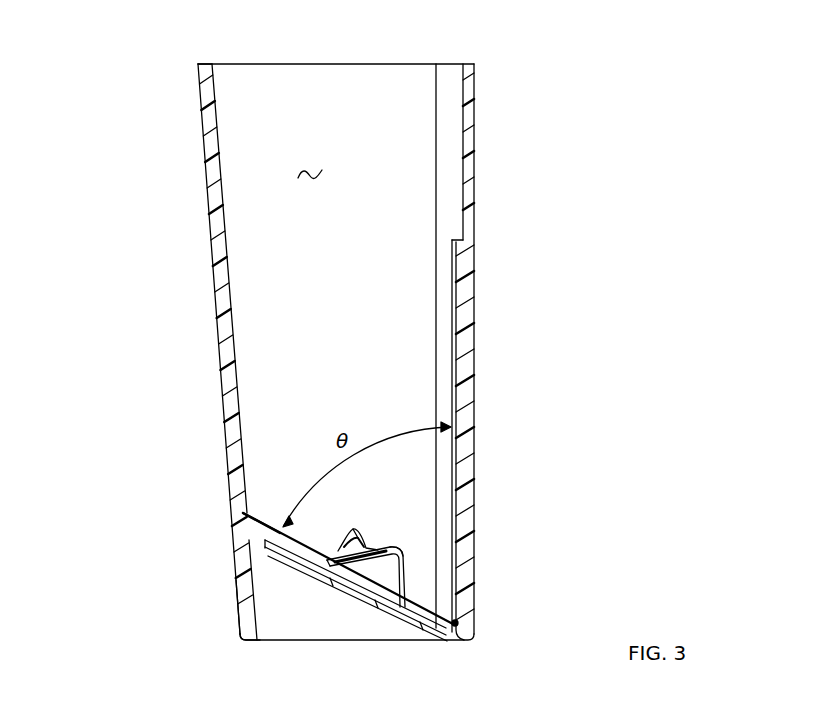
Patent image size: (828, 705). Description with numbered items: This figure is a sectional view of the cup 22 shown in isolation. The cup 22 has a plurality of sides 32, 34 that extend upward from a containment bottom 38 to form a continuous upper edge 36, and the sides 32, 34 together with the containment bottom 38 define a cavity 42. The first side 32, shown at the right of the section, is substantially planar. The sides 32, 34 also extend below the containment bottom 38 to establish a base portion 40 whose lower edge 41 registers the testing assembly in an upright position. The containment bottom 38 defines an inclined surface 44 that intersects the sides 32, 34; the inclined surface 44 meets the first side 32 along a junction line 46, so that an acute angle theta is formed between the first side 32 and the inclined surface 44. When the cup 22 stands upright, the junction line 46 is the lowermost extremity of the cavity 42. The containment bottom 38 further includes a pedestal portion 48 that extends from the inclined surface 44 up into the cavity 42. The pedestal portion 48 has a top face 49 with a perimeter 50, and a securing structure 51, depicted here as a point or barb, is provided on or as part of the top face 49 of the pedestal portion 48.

The cup 22 is at (168, 114).
The first side 32 is at (476, 204).
The side 34 is at (210, 178).
The continuous upper edge 36 is at (205, 64).
The containment bottom 38 is at (244, 569).
The base portion 40 is at (240, 599).
The lower edge 41 is at (250, 641).
The cavity 42 is at (310, 172).
The inclined surface 44 is at (244, 569).
The junction line 46 is at (457, 624).
The pedestal portion 48 is at (404, 576).
The top face 49 is at (385, 550).
The perimeter 50 is at (402, 552).
The securing structure 51 is at (356, 530).